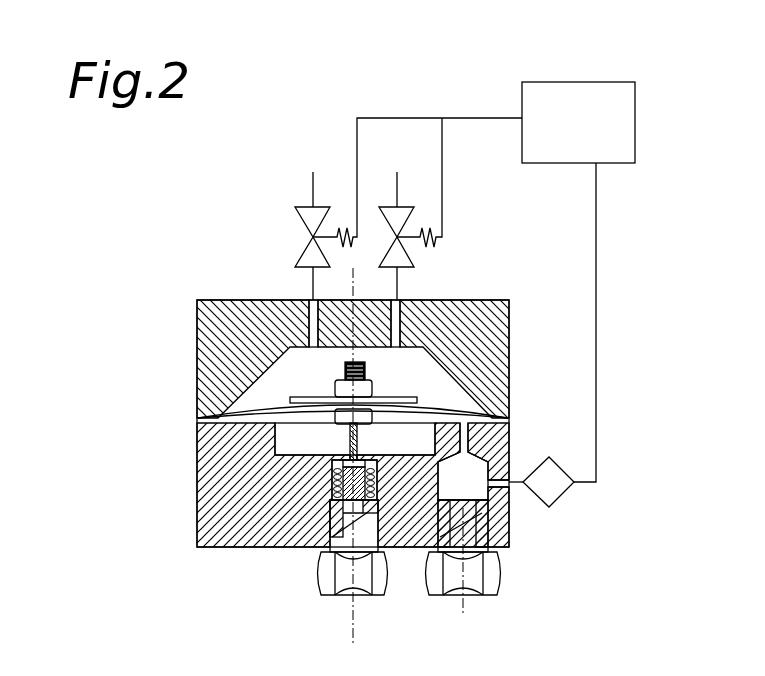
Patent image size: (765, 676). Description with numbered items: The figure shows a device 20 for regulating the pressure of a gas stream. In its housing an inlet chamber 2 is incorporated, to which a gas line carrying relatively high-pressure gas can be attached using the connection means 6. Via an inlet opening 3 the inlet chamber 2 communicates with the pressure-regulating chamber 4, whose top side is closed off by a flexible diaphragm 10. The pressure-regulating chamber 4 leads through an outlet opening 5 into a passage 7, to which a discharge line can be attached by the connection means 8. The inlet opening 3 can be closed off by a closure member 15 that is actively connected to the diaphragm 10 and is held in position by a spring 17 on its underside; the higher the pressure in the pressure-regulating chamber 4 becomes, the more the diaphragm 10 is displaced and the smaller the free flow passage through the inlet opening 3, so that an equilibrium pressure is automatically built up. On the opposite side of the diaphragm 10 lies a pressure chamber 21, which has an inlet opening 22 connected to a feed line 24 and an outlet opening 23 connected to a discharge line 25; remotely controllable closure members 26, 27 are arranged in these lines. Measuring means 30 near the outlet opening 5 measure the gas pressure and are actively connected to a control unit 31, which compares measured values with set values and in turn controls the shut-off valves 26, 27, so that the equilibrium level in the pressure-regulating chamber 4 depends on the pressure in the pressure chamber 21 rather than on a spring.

The inlet chamber 2 is at (297, 548).
The inlet opening 3 is at (368, 448).
The pressure-regulating chamber 4 is at (298, 442).
The outlet opening 5 is at (487, 447).
The connection means 6 is at (366, 578).
The passage 7 is at (486, 492).
The connection means 8 is at (478, 578).
The diaphragm 10 is at (463, 400).
The closure member 15 is at (333, 485).
The spring 17 is at (383, 458).
The device 20 is at (205, 280).
The pressure chamber 21 is at (290, 380).
The inlet opening 22 is at (312, 328).
The outlet opening 23 is at (396, 322).
The feed line 24 is at (313, 181).
The discharge line 25 is at (395, 180).
The remotely controllable closure member 26 is at (308, 256).
The remotely controllable closure member 27 is at (410, 258).
The measuring means 30 is at (548, 487).
The control unit 31 is at (580, 148).